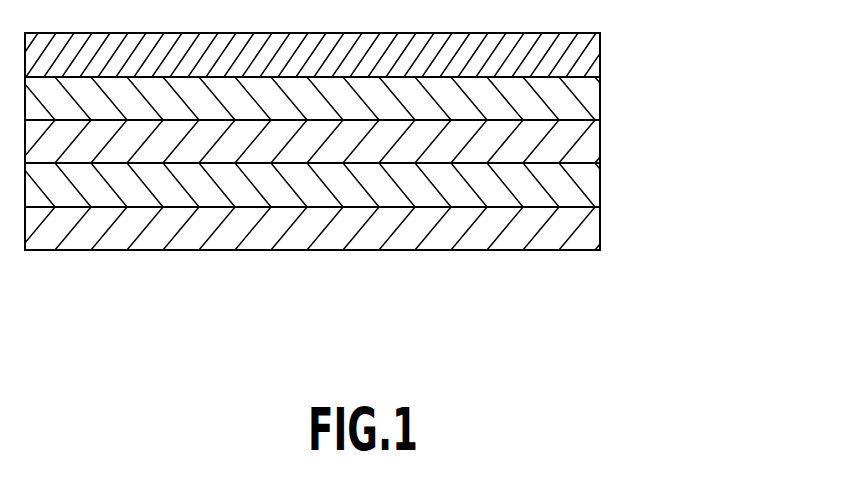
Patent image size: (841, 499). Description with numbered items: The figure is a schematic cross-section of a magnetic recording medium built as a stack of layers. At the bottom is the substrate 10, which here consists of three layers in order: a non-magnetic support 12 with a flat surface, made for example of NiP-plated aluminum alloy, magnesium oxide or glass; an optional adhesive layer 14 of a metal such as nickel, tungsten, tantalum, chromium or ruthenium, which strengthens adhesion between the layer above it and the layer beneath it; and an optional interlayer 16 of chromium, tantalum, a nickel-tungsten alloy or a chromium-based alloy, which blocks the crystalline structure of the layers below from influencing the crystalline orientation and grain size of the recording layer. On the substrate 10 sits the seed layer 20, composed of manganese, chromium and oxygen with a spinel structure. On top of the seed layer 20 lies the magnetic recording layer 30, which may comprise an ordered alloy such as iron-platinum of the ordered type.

The substrate 10 is at (410, 185).
The non-magnetic support 12 is at (375, 228).
The adhesive layer 14 is at (582, 185).
The interlayer 16 is at (582, 142).
The seed layer 20 is at (582, 102).
The magnetic recording layer 30 is at (582, 53).